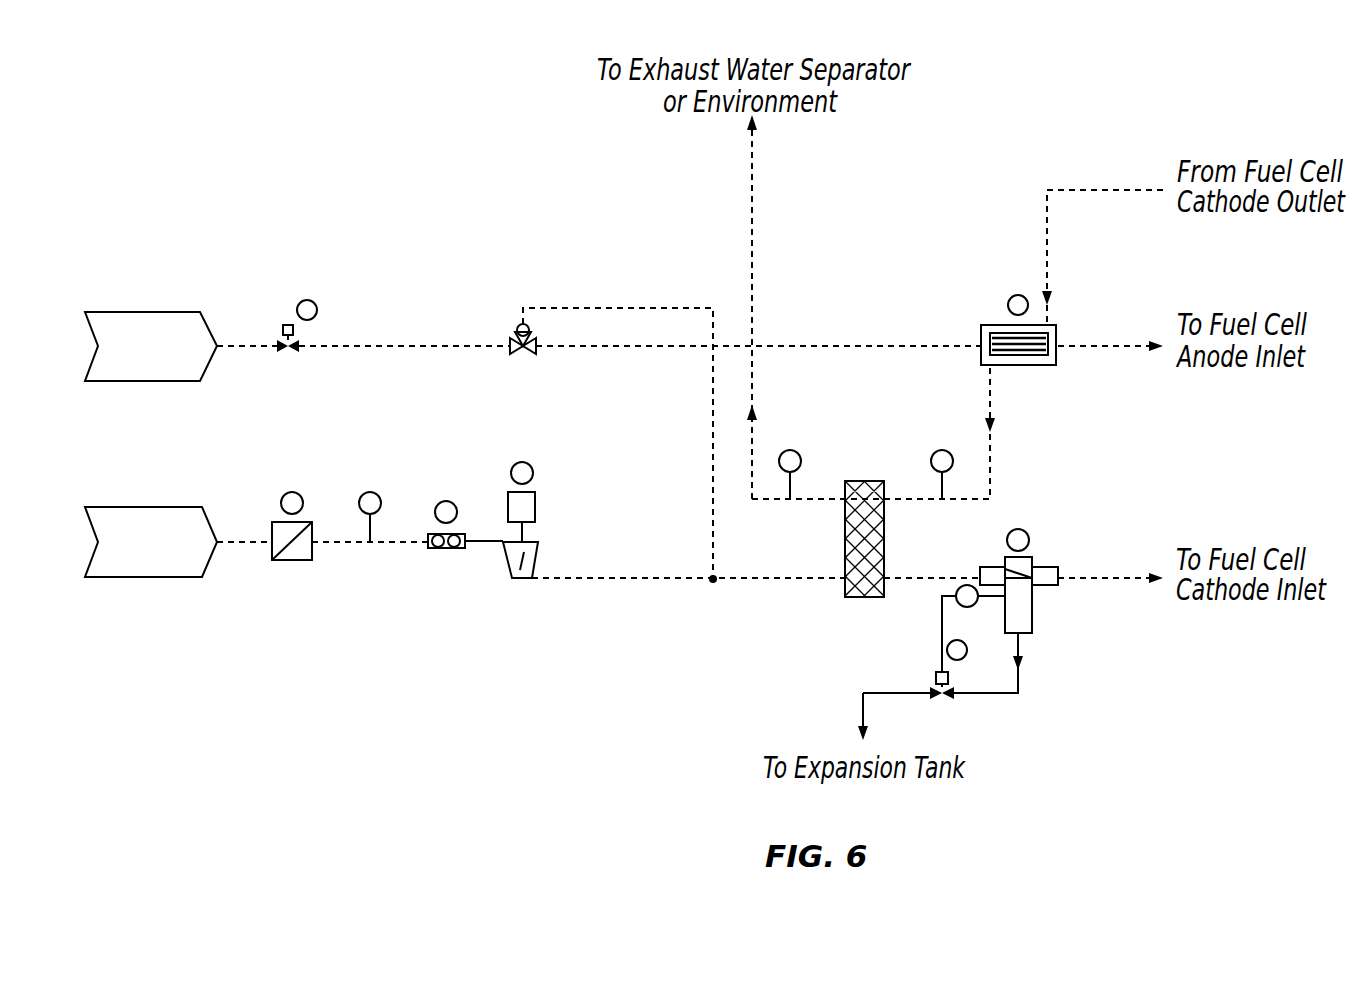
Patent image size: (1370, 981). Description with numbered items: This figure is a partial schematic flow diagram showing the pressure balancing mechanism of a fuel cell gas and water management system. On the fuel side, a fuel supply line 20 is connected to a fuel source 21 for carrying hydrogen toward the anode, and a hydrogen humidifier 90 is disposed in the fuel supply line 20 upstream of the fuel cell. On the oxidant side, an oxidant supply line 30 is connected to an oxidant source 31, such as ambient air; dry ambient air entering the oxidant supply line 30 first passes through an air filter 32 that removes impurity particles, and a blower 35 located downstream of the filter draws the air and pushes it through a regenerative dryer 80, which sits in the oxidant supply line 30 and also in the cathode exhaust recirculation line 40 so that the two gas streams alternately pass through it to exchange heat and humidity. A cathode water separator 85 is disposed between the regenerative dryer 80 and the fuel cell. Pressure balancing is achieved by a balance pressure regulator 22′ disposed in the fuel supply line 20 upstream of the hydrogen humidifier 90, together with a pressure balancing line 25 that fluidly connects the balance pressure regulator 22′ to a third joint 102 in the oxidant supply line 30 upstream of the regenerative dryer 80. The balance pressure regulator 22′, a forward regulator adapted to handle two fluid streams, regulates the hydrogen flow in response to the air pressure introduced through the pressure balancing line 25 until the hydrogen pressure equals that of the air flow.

The fuel source 21 is at (155, 312).
The fuel supply line 20 is at (312, 346).
The balance pressure regulator 22′ is at (520, 325).
The pressure balancing line 25 is at (676, 307).
The cathode exhaust recirculation line 40 is at (1095, 188).
The hydrogen humidifier 90 is at (1005, 333).
The oxidant source 31 is at (155, 507).
The air filter 32 is at (292, 560).
The oxidant supply line 30 is at (378, 545).
The blower 35 is at (520, 580).
The third joint 102 is at (710, 583).
The regenerative dryer 80 is at (862, 597).
The cathode water separator 85 is at (1028, 576).